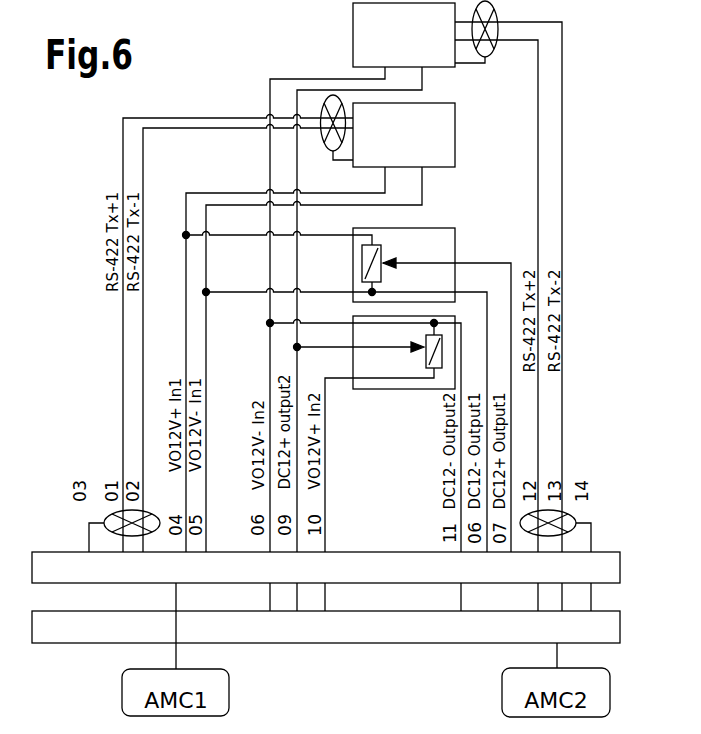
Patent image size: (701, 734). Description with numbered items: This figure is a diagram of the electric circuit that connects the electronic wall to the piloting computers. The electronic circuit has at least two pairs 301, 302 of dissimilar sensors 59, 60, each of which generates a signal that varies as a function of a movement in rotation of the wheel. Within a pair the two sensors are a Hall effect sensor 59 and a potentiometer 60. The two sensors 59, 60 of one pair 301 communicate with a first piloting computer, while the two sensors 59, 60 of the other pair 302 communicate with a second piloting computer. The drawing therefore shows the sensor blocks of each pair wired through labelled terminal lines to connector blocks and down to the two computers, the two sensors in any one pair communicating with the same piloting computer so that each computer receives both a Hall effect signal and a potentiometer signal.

The pair of sensors 302 is at (353, 53).
The pair of sensors 301 is at (455, 142).
The Hall effect sensor 59 is at (410, 80).
The potentiometer 60 is at (438, 228).